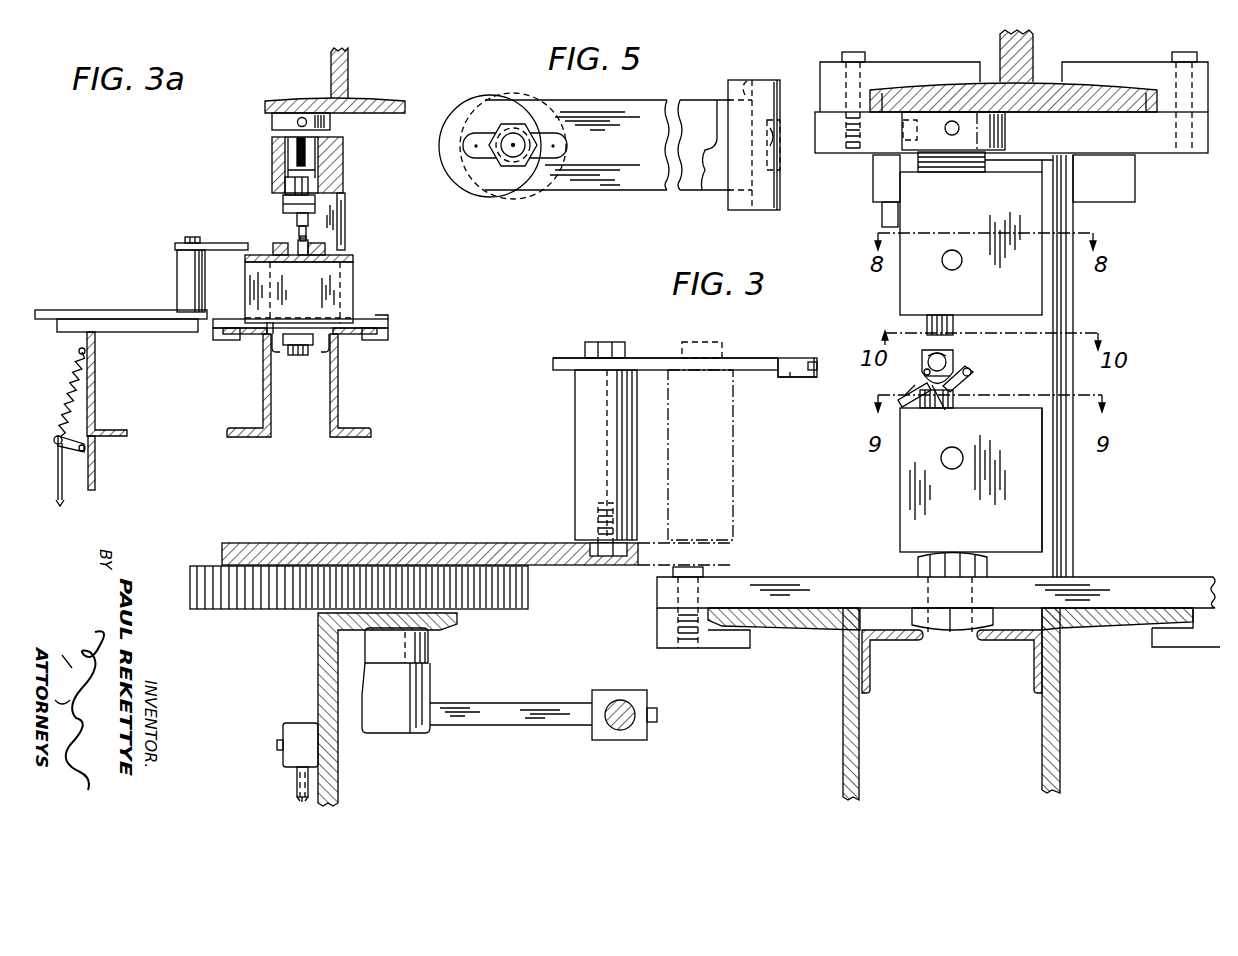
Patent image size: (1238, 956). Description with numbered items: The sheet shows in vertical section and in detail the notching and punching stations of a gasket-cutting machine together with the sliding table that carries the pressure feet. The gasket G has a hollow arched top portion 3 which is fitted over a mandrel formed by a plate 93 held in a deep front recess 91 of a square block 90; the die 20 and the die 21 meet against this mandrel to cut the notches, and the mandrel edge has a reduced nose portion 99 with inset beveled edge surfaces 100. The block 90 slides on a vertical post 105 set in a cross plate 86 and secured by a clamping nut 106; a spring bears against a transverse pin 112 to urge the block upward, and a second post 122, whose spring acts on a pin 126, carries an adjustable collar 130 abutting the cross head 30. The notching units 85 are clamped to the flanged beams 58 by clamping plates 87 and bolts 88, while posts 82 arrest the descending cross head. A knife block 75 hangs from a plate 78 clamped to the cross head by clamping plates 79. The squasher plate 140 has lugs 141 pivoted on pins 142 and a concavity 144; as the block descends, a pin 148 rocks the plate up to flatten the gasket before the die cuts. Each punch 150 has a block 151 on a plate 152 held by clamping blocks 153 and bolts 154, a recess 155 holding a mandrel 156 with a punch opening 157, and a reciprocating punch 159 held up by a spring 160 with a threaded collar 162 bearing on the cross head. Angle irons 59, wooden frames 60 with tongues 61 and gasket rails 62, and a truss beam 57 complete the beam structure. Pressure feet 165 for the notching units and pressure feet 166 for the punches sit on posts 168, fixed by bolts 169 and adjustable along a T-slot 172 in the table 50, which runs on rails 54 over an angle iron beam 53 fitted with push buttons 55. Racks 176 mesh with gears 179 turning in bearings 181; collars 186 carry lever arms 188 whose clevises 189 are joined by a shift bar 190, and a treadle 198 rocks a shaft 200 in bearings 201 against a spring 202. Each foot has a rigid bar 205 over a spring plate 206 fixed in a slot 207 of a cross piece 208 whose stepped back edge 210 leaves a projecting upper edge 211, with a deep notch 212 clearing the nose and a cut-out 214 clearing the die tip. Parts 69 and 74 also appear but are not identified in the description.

In FIG. 3, the hollow arched top portion 3 is at (942, 412).
In FIG. 3, the knife or die 20 is at (935, 315).
In FIG. 3, the die 21 is at (953, 405).
In FIG. 3a, the cross head 30 is at (383, 101).
In FIG. 3, the cross head 30 is at (1037, 52).
In FIG. 3, the sliding table 50 is at (320, 543).
In FIG. 3a, the angle iron beam 53 is at (96, 385).
In FIG. 3, the angle iron beam 53 is at (338, 778).
In FIG. 3a, the short rails 54 is at (152, 326).
In FIG. 3, the push buttons 55 is at (296, 726).
In FIG. 3a, the truss beam 57 is at (96, 478).
In FIG. 3a, the flanged beams 58 is at (263, 400).
In FIG. 3, the flanged beams 58 is at (845, 703).
In FIG. 3a, the angle irons 59 is at (273, 352).
In FIG. 3, the angle irons 59 is at (905, 641).
In FIG. 3a, the wooden frames 60 is at (353, 290).
In FIG. 3a, the tongues 61 is at (267, 333).
In FIG. 3a, the rails 62 is at (327, 249).
In FIG. 3a, the bolt 69 is at (190, 238).
In FIG. 3, the bolt 74 is at (598, 522).
In FIG. 3, the knife block 75 is at (1114, 194).
In FIG. 3, the plate 78 is at (1155, 152).
In FIG. 3, the clamping plates 79 is at (920, 65).
In FIG. 3, the posts 82 is at (1075, 297).
In FIG. 3, the notch-cutting units 85 is at (1042, 493).
In FIG. 3, the cross plate 86 is at (1150, 577).
In FIG. 3, the clamping plates 87 is at (727, 648).
In FIG. 3, the bolts 88 is at (676, 577).
In FIG. 3, the block 90 is at (900, 505).
In FIG. 3, the square recess 91 is at (897, 317).
In FIG. 3, the plate (mandrel) 93 is at (952, 368).
In FIG. 3a, the nose portion 99 is at (64, 452).
In FIG. 3, the nose portion 99 is at (922, 362).
In FIG. 3, the beveled edge surfaces 100 is at (950, 355).
In FIG. 3, the vertical post 105 is at (918, 563).
In FIG. 3, the clamping nut 106 is at (965, 632).
In FIG. 3, the transverse pin 112 is at (952, 469).
In FIG. 3, the post 122 is at (920, 163).
In FIG. 3, the transverse pin 126 is at (960, 268).
In FIG. 3, the adjustable collar 130 is at (1005, 127).
In FIG. 3, the plate (squasher) 140 is at (898, 400).
In FIG. 3, the wings or lugs 141 is at (975, 378).
In FIG. 3, the pivot pins 142 is at (972, 372).
In FIG. 3, the concavity 144 is at (905, 392).
In FIG. 3, the pin 148 is at (928, 408).
In FIG. 3a, the punches 150 is at (359, 153).
In FIG. 3a, the block 151 is at (345, 212).
In FIG. 3a, the plate 152 is at (368, 320).
In FIG. 3a, the clamping blocks 153 is at (227, 334).
In FIG. 3a, the bolts 154 is at (222, 320).
In FIG. 3a, the recess 155 is at (274, 206).
In FIG. 3a, the mandrel 156 is at (310, 240).
In FIG. 3a, the punch opening 157 is at (300, 238).
In FIG. 3a, the reciprocating punch 159 is at (292, 182).
In FIG. 3a, the spring 160 is at (280, 147).
In FIG. 3a, the screw threaded collar 162 is at (330, 123).
In FIG. 3, the pressure feet 165 is at (672, 349).
In FIG. 3a, the pressure feet 166 is at (191, 252).
In FIG. 3a, the posts 168 is at (182, 297).
In FIG. 5, the posts 168 is at (520, 200).
In FIG. 3, the posts 168 is at (585, 463).
In FIG. 5, the bolts 169 is at (511, 126).
In FIG. 3, the bolts 169 is at (605, 342).
In FIG. 3, the T-slot 172 is at (600, 560).
In FIG. 3, the racks 176 is at (525, 610).
In FIG. 3, the gear 179 is at (318, 600).
In FIG. 3, the bearing 181 is at (428, 650).
In FIG. 3, the collar 186 is at (430, 688).
In FIG. 3, the lever arm 188 is at (522, 725).
In FIG. 3, the clevises 189 is at (641, 742).
In FIG. 3, the shift bar 190 is at (635, 710).
In FIG. 3a, the treadle or stirrup 198 is at (58, 497).
In FIG. 3a, the horizontal shaft 200 is at (86, 450).
In FIG. 3a, the bearings 201 is at (55, 443).
In FIG. 3a, the coil spring 202 is at (67, 407).
In FIG. 5, the rigid bar 205 is at (660, 100).
In FIG. 3, the rigid bar 205 is at (748, 358).
In FIG. 5, the flat spring metal plate 206 is at (708, 185).
In FIG. 3, the flat spring metal plate 206 is at (740, 370).
In FIG. 5, the slot 207 is at (750, 92).
In FIG. 3, the slot 207 is at (785, 360).
In FIG. 5, the cross piece 208 is at (745, 205).
In FIG. 3, the cross piece 208 is at (800, 377).
In FIG. 5, the stepped back edge 210 is at (782, 90).
In FIG. 3, the stepped back edge 210 is at (817, 366).
In FIG. 5, the projecting upper edge 211 is at (795, 157).
In FIG. 3, the projecting upper edge 211 is at (818, 360).
In FIG. 5, the deep notch 212 is at (778, 160).
In FIG. 5, the cut-out 214 is at (780, 135).
In FIG. 3, the gasket G is at (940, 355).